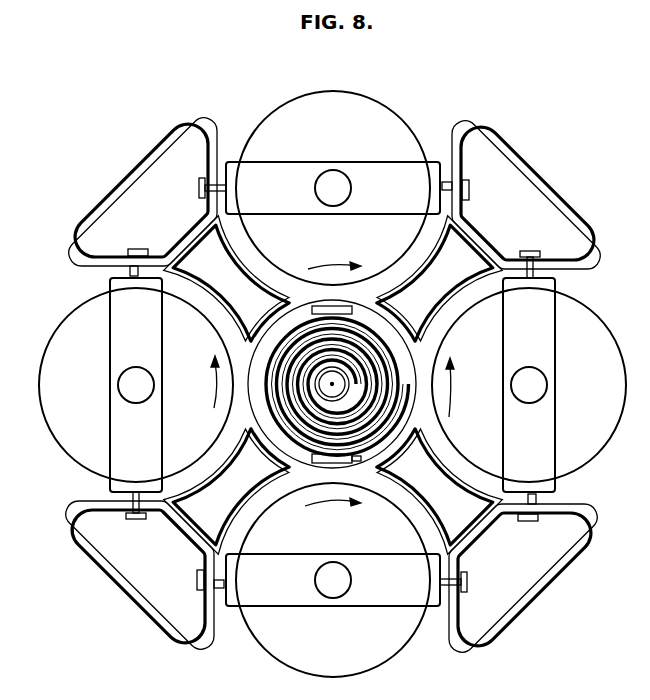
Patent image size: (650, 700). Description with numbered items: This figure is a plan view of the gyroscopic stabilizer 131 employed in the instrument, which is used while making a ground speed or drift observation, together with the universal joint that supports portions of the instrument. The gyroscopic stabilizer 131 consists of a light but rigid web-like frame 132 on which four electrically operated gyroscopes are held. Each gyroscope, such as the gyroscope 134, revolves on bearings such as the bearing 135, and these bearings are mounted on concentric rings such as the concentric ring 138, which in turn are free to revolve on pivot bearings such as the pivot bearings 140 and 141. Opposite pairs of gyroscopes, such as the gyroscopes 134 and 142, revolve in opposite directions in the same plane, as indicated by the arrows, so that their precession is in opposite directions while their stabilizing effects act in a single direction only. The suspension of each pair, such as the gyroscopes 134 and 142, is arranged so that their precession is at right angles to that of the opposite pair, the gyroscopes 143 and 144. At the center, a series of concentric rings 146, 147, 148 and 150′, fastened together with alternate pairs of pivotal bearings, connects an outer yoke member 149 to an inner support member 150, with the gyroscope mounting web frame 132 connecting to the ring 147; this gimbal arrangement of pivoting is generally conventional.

The gyroscopic stabilizer 131 is at (558, 184).
The web-like frame 132 is at (469, 232).
The gyroscope 134 is at (533, 385).
The bearing 135 is at (548, 379).
The concentric ring 138 is at (555, 429).
The pivot bearing 140 is at (521, 522).
The pivot bearing 141 is at (517, 253).
The gyroscope 142 is at (73, 306).
The gyroscope 143 is at (357, 93).
The gyroscope 144 is at (361, 676).
The concentric ring 146 is at (373, 342).
The concentric ring 147 is at (298, 347).
The concentric ring 148 is at (305, 413).
The outer yoke member 149 is at (361, 459).
The inner support member 150 is at (337, 413).
The concentric ring 150′ is at (355, 393).